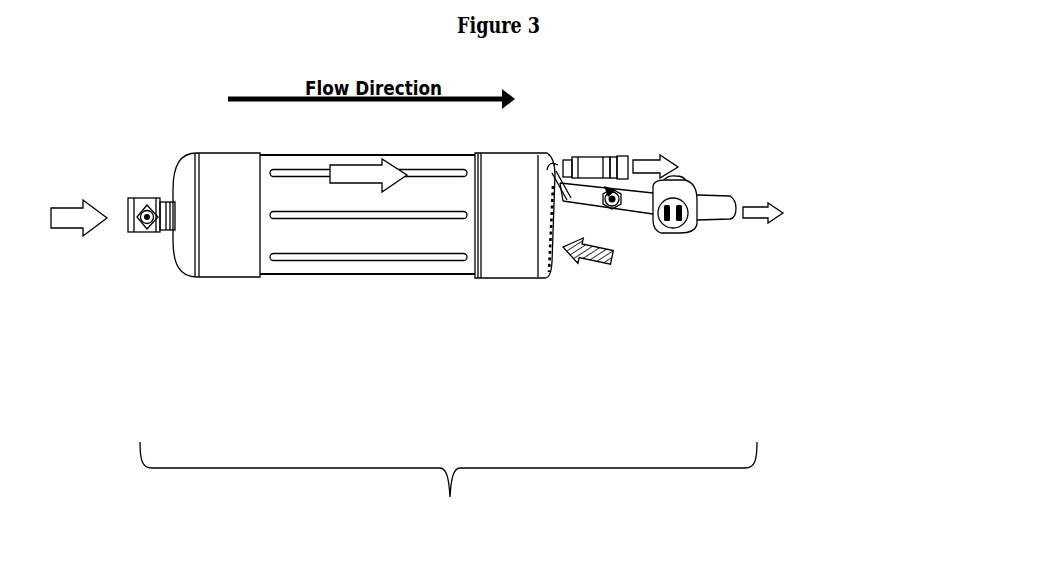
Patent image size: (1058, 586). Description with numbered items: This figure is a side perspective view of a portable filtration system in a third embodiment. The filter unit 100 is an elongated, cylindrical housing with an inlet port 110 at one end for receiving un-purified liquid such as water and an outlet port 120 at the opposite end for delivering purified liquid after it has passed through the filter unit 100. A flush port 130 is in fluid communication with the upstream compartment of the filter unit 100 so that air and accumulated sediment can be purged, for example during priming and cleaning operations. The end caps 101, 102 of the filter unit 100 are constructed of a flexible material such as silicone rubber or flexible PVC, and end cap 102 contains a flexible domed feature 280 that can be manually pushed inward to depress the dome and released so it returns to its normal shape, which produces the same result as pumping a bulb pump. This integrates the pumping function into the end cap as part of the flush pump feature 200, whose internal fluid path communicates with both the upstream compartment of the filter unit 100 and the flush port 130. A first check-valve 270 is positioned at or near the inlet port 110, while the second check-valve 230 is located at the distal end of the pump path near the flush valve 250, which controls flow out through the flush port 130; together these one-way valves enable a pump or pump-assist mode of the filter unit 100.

The filter unit 100 is at (364, 217).
The end cap 101 is at (208, 183).
The end cap 102 is at (508, 178).
The inlet port 110 is at (113, 183).
The outlet port 120 is at (637, 150).
The flush port 130 is at (790, 225).
The flush pump feature 200 is at (462, 539).
The second check-valve 230 is at (632, 212).
The flush valve 250 is at (703, 187).
The first check-valve 270 is at (148, 237).
The flexible domed feature 280 is at (560, 260).